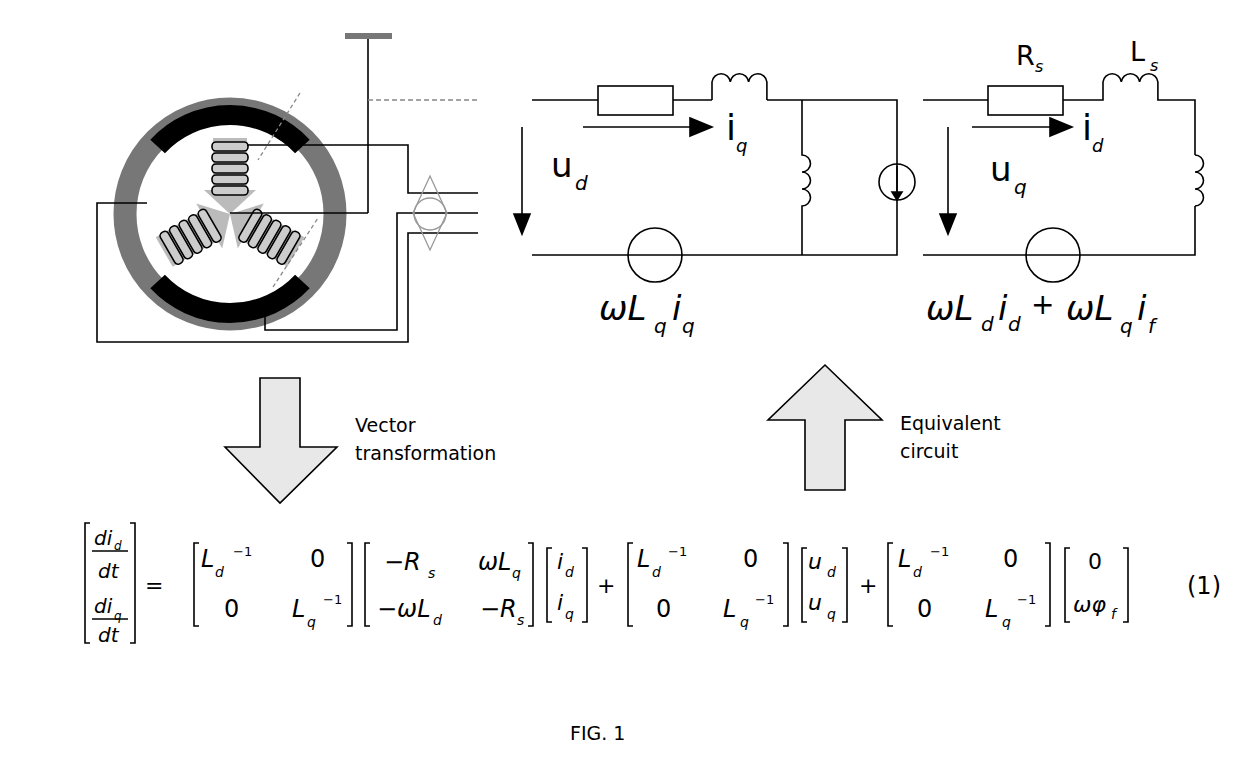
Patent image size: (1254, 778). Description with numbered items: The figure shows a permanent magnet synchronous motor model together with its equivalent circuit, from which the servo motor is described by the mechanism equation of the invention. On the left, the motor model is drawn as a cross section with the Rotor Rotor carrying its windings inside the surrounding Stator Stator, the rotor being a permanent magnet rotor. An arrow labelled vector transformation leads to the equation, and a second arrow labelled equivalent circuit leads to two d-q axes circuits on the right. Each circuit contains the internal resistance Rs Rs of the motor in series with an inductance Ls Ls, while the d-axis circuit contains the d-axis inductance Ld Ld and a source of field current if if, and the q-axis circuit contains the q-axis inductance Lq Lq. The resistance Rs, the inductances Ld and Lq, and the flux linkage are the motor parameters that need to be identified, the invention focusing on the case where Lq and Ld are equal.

The rotor Rotor is at (213, 97).
The stator Stator is at (258, 97).
The internal resistance Rs is at (635, 77).
The stator leakage inductance Ls is at (739, 69).
The d-axis inductance Ld is at (781, 177).
The q-axis inductance Lq is at (1172, 185).
The field current source if is at (876, 162).